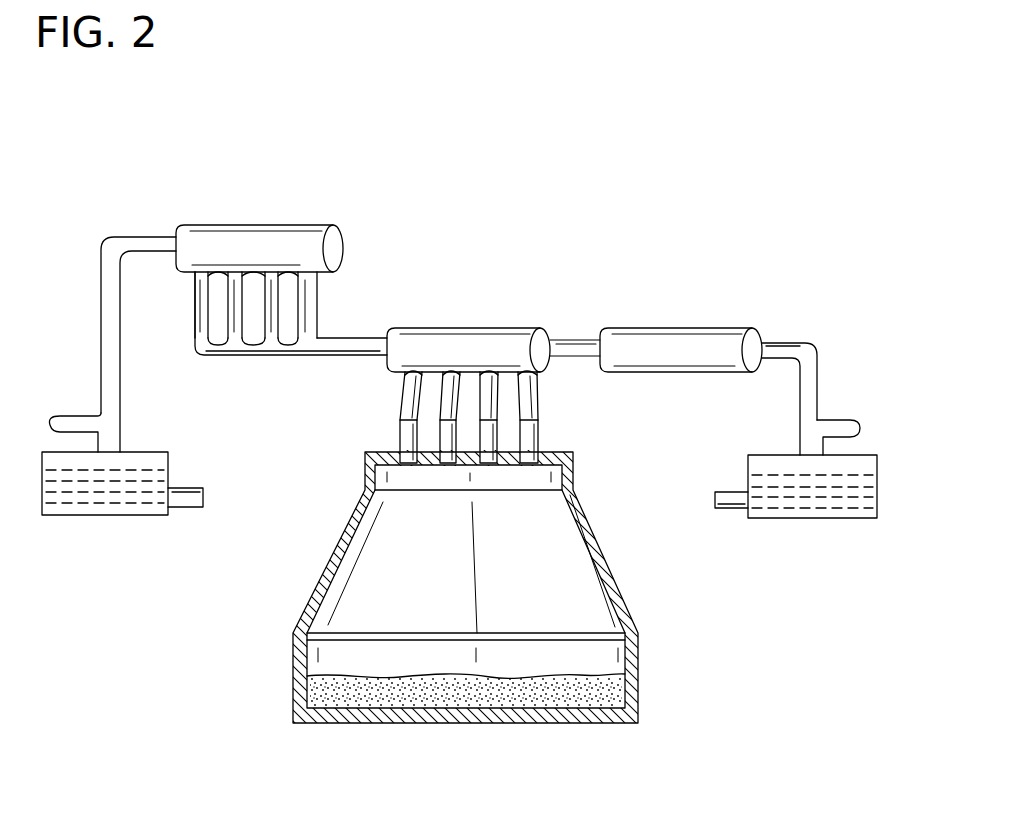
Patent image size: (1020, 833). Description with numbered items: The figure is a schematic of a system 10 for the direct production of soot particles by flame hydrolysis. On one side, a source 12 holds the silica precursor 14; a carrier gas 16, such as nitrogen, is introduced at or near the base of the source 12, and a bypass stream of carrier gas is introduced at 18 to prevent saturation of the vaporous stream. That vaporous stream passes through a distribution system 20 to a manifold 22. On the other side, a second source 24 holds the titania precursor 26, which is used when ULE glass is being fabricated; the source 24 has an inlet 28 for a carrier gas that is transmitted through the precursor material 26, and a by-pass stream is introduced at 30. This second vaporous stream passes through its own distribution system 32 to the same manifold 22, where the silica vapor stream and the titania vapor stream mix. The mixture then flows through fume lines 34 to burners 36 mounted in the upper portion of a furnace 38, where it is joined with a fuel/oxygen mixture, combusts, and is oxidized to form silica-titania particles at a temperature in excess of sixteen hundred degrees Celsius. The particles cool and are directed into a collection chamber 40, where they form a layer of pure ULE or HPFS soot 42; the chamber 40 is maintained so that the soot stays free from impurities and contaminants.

The system 10 is at (590, 183).
The source 12 is at (37, 490).
The silica precursor 14 is at (115, 498).
The carrier gas 16 is at (205, 492).
The bypass stream inlet 18 is at (48, 413).
The distribution system 20 is at (333, 252).
The manifold 22 is at (467, 327).
The source 24 is at (878, 492).
The titania precursor 26 is at (800, 503).
The inlet 28 is at (715, 502).
The by-pass stream inlet 30 is at (863, 430).
The distribution system 32 is at (677, 328).
The fume lines 34 is at (406, 402).
The burners 36 is at (400, 450).
The furnace 38 is at (560, 450).
The collection chamber 40 is at (617, 595).
The soot 42 is at (548, 693).